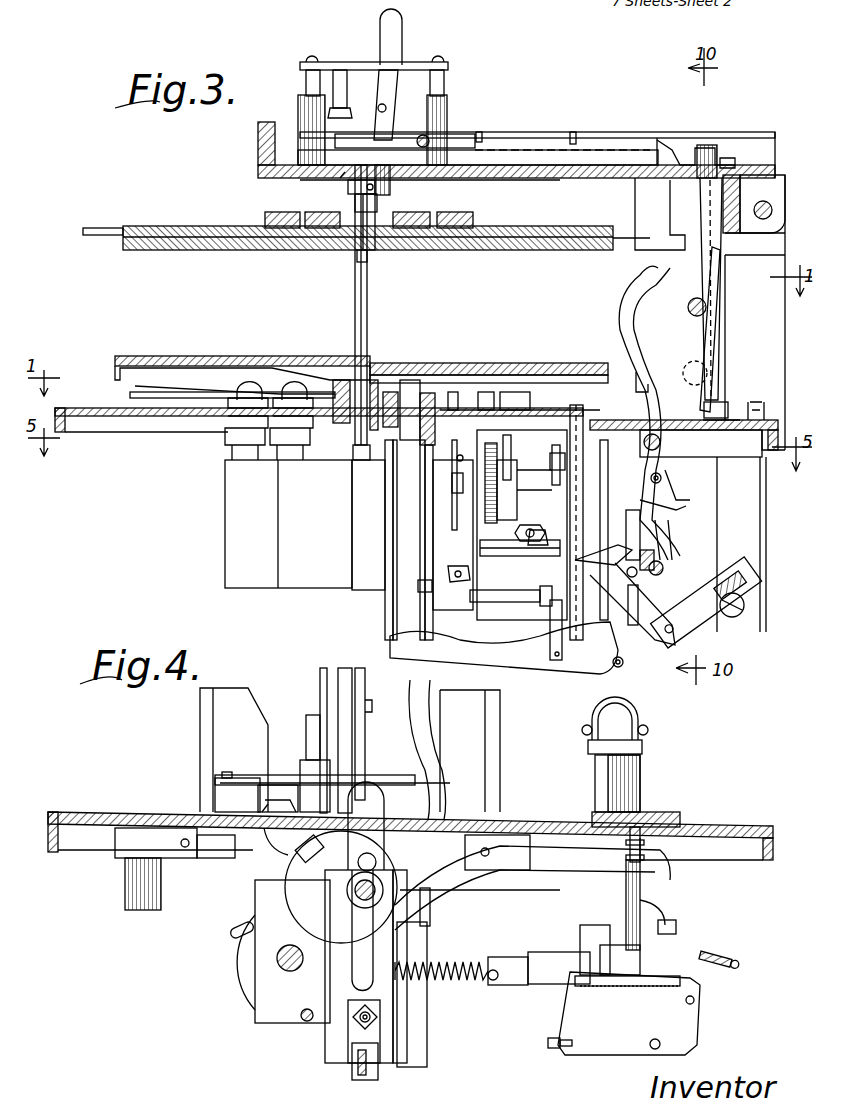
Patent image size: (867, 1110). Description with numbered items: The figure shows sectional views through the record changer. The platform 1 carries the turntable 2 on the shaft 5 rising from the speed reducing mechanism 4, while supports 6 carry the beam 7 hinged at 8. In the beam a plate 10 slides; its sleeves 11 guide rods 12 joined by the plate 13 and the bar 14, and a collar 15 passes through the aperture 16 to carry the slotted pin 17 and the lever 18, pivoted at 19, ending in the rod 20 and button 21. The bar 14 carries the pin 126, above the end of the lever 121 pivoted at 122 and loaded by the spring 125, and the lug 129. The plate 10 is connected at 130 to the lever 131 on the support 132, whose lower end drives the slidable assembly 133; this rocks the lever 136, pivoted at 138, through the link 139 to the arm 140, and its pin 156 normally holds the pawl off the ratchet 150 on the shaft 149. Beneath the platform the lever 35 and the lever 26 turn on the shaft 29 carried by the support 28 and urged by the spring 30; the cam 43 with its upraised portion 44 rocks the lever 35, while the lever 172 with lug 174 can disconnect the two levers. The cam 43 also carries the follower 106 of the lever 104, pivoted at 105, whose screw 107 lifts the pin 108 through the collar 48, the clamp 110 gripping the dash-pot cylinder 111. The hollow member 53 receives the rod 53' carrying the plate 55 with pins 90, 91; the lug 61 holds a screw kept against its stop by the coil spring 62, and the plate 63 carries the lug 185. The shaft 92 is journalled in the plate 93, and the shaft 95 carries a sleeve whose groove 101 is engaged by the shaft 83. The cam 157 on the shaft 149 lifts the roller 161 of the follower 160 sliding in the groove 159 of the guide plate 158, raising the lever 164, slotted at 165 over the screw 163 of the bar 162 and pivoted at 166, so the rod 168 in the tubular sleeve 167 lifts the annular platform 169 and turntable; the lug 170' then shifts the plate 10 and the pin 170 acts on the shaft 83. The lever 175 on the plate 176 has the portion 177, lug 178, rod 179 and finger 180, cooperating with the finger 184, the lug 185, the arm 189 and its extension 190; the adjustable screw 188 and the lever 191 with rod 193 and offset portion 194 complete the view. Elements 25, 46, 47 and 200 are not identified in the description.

In FIG. 3, the support or platform 1 is at (110, 424).
In FIG. 4, the support or platform 1 is at (84, 812).
In FIG. 3, the turntable 2 is at (116, 374).
In FIG. 3, the speed reducing mechanism 4 is at (288, 524).
In FIG. 3, the shaft 5 is at (370, 330).
In FIG. 3, the supports 6 is at (770, 352).
In FIG. 4, the supports 6 is at (200, 726).
In FIG. 3, the beam 7 is at (270, 170).
In FIG. 3, the hinge 8 is at (776, 206).
In FIG. 3, the plate 10 is at (530, 172).
In FIG. 3, the sleeves 11 is at (300, 101).
In FIG. 3, the rods 12 is at (305, 78).
In FIG. 3, the plate 13 is at (455, 222).
In FIG. 3, the bar 14 is at (420, 58).
In FIG. 3, the collar 15 is at (390, 186).
In FIG. 3, the aperture 16 is at (333, 179).
In FIG. 3, the pin 17 is at (378, 206).
In FIG. 3, the lever 18 is at (400, 26).
In FIG. 3, the pivot 19 is at (348, 190).
In FIG. 3, the rod 20 is at (362, 206).
In FIG. 3, the button 21 is at (372, 254).
In FIG. 3, the bracket 25 is at (718, 160).
In FIG. 3, the lever 26 is at (722, 254).
In FIG. 4, the lever 26 is at (320, 674).
In FIG. 4, the support 28 is at (349, 676).
In FIG. 3, the shaft 29 is at (712, 374).
In FIG. 4, the shaft 29 is at (276, 770).
In FIG. 4, the spring 30 is at (310, 716).
In FIG. 3, the lever 35 is at (680, 484).
In FIG. 3, the cam 43 is at (640, 608).
In FIG. 4, the cam 43 is at (232, 976).
In FIG. 4, the upraised portion 44 is at (236, 928).
In FIG. 3, the plate 46 is at (520, 252).
In FIG. 3, the plate 47 is at (340, 254).
In FIG. 4, the collar 48 is at (640, 790).
In FIG. 4, the hollow member 53 is at (661, 905).
In FIG. 4, the rod 53' is at (627, 992).
In FIG. 4, the plate 55 is at (670, 1014).
In FIG. 3, the lug 61 is at (552, 468).
In FIG. 4, the coil spring 62 is at (462, 986).
In FIG. 3, the plate 63 is at (664, 560).
In FIG. 3, the shaft 83 is at (524, 540).
In FIG. 4, the pin 90 is at (662, 1044).
In FIG. 4, the pin 91 is at (548, 1044).
In FIG. 3, the shaft 92 is at (430, 550).
In FIG. 3, the plate 93 is at (470, 518).
In FIG. 3, the shaft 95 is at (560, 576).
In FIG. 4, the shaft 95 is at (278, 958).
In FIG. 3, the annular groove 101 is at (532, 600).
In FIG. 3, the lever 104 is at (622, 528).
In FIG. 4, the lever 104 is at (548, 890).
In FIG. 4, the pivot 105 is at (534, 870).
In FIG. 3, the follower 106 is at (668, 580).
In FIG. 4, the adjustable screw 107 is at (626, 850).
In FIG. 4, the pin 108 is at (610, 812).
In FIG. 4, the clamp 110 is at (118, 850).
In FIG. 4, the cylinder 111 is at (130, 884).
In FIG. 3, the lever 121 is at (512, 140).
In FIG. 3, the pivot 122 is at (455, 125).
In FIG. 3, the spring 125 is at (578, 136).
In FIG. 3, the pin 126 is at (340, 68).
In FIG. 3, the lug 129 is at (396, 105).
In FIG. 3, the connection 130 is at (692, 188).
In FIG. 3, the lever 131 is at (710, 258).
In FIG. 4, the lever 131 is at (362, 674).
In FIG. 3, the support 132 is at (722, 340).
In FIG. 4, the support 132 is at (358, 750).
In FIG. 3, the slidable assembly 133 is at (780, 424).
In FIG. 3, the lever 136 is at (460, 392).
In FIG. 3, the pivot 138 is at (446, 464).
In FIG. 3, the link 139 is at (456, 590).
In FIG. 3, the arm 140 is at (494, 556).
In FIG. 3, the shaft 149 is at (450, 486).
In FIG. 4, the shaft 149 is at (356, 896).
In FIG. 3, the ratchet 150 is at (508, 484).
In FIG. 4, the ratchet 150 is at (610, 710).
In FIG. 3, the pin 156 is at (510, 448).
In FIG. 4, the cam 157 is at (298, 906).
In FIG. 4, the guide plate 158 is at (330, 984).
In FIG. 4, the groove 159 is at (330, 994).
In FIG. 3, the follower 160 is at (545, 648).
In FIG. 4, the follower 160 is at (374, 1008).
In FIG. 4, the roller 161 is at (368, 852).
In FIG. 3, the bar 162 is at (752, 526).
In FIG. 3, the screw 163 is at (742, 620).
In FIG. 3, the lever 164 is at (596, 672).
In FIG. 3, the slot 165 is at (728, 620).
In FIG. 4, the pivot 166 is at (350, 1068).
In FIG. 3, the tubular sleeve 167 is at (392, 510).
In FIG. 3, the rod 168 is at (396, 576).
In FIG. 3, the platform 169 is at (464, 370).
In FIG. 3, the pin 170 is at (568, 526).
In FIG. 4, the lug 170' is at (302, 851).
In FIG. 3, the lever 172 is at (215, 378).
In FIG. 4, the lug 174 is at (278, 797).
In FIG. 3, the lever 175 is at (667, 441).
In FIG. 3, the plate 176 is at (736, 452).
In FIG. 3, the portion 177 is at (618, 300).
In FIG. 4, the portion 177 is at (418, 712).
In FIG. 3, the lug 178 is at (690, 510).
In FIG. 4, the lug 178 is at (430, 908).
In FIG. 3, the rod 179 is at (660, 476).
In FIG. 4, the rod 179 is at (586, 860).
In FIG. 4, the finger 180 is at (680, 930).
In FIG. 4, the finger 184 is at (598, 932).
In FIG. 3, the lug 185 is at (668, 530).
In FIG. 4, the lug 185 is at (428, 938).
In FIG. 4, the adjustable screw 188 is at (722, 950).
In FIG. 3, the arm 189 is at (628, 660).
In FIG. 4, the arm 189 is at (430, 1048).
In FIG. 3, the extension 190 is at (625, 595).
In FIG. 3, the lever 191 is at (160, 418).
In FIG. 3, the rod 193 is at (640, 372).
In FIG. 4, the rod 193 is at (244, 776).
In FIG. 4, the offset portion 194 is at (378, 784).
In FIG. 3, the block 200 is at (504, 394).